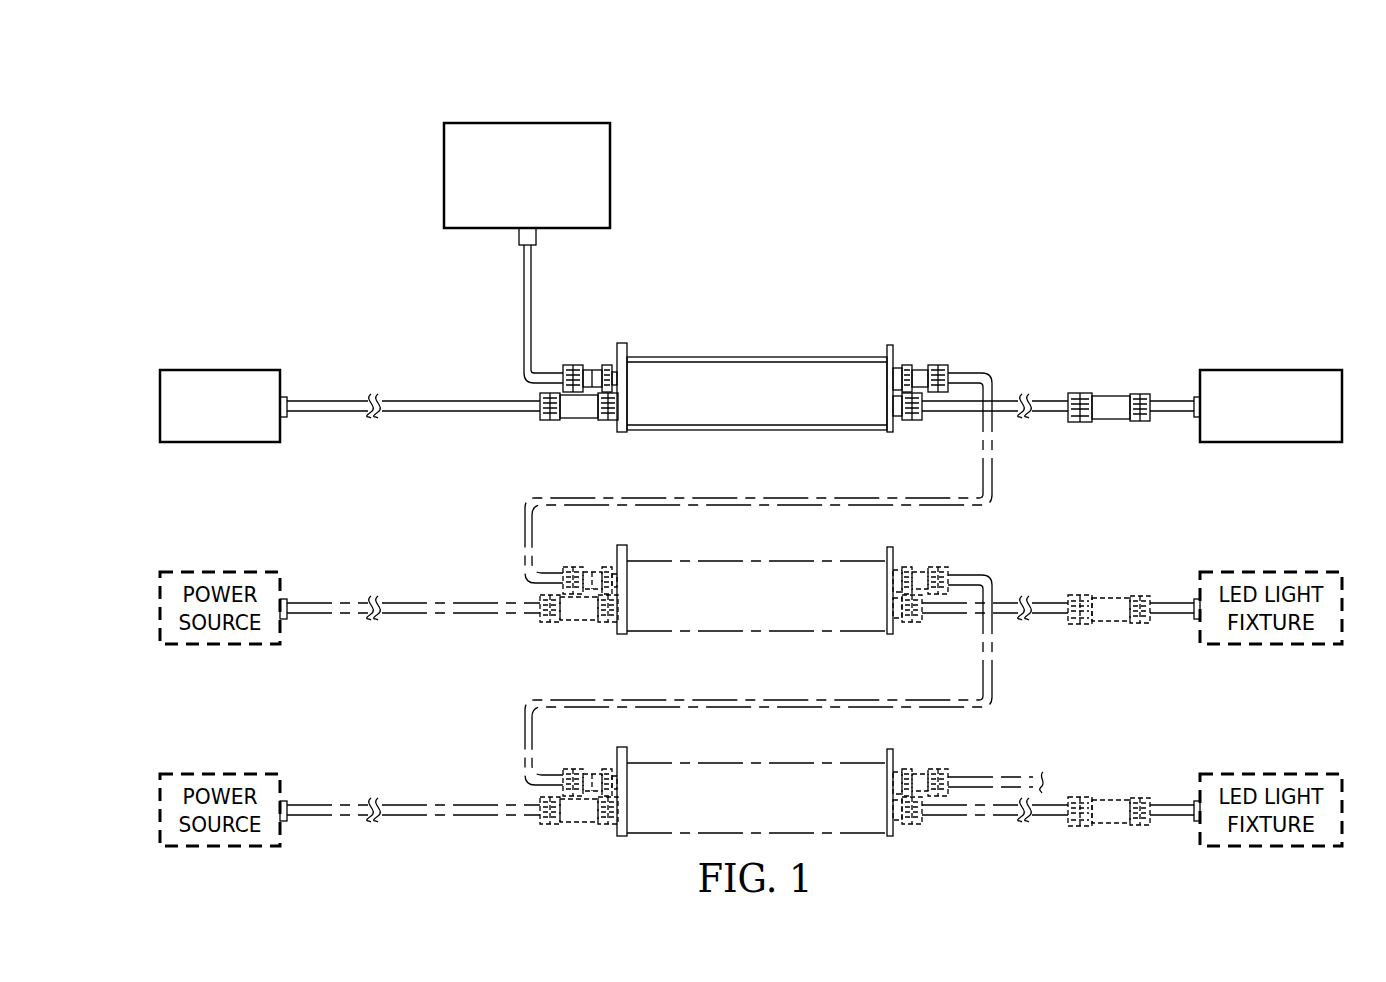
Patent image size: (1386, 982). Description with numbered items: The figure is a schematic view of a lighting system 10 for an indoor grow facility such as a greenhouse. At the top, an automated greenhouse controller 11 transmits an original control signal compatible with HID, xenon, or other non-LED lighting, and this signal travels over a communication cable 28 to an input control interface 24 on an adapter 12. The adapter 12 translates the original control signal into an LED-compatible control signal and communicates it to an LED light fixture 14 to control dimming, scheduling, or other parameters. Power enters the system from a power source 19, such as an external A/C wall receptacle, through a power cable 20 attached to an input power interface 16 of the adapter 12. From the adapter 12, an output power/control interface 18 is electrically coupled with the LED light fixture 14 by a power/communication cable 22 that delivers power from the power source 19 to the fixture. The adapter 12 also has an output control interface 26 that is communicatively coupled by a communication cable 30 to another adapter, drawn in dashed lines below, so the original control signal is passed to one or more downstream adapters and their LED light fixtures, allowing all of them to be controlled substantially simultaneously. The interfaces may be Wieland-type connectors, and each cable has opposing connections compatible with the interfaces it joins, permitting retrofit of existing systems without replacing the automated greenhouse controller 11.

The lighting system 10 is at (979, 90).
The automated greenhouse controller 11 is at (444, 175).
The adapter 12 is at (773, 357).
The LED light fixture 14 is at (1272, 370).
The input power interface 16 is at (605, 432).
The output power/control interface 18 is at (902, 432).
The power source 19 is at (220, 370).
The power cable 20 is at (409, 400).
The power/communication cable 22 is at (1042, 400).
The input control interface 24 is at (607, 362).
The output control interface 26 is at (898, 362).
The communication cable 28 is at (523, 300).
The communication cable 30 is at (995, 470).